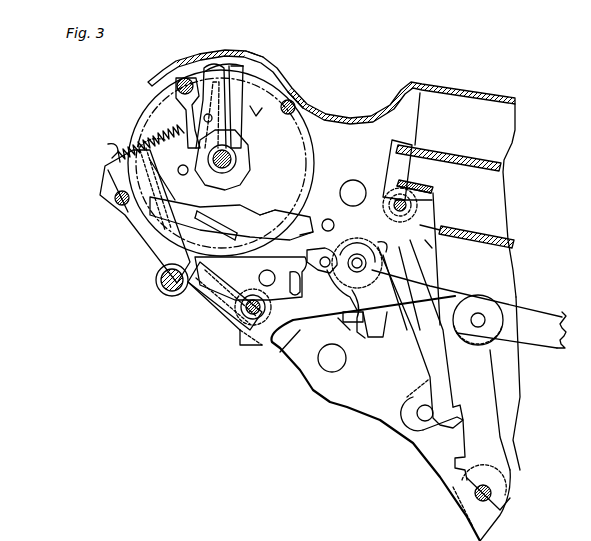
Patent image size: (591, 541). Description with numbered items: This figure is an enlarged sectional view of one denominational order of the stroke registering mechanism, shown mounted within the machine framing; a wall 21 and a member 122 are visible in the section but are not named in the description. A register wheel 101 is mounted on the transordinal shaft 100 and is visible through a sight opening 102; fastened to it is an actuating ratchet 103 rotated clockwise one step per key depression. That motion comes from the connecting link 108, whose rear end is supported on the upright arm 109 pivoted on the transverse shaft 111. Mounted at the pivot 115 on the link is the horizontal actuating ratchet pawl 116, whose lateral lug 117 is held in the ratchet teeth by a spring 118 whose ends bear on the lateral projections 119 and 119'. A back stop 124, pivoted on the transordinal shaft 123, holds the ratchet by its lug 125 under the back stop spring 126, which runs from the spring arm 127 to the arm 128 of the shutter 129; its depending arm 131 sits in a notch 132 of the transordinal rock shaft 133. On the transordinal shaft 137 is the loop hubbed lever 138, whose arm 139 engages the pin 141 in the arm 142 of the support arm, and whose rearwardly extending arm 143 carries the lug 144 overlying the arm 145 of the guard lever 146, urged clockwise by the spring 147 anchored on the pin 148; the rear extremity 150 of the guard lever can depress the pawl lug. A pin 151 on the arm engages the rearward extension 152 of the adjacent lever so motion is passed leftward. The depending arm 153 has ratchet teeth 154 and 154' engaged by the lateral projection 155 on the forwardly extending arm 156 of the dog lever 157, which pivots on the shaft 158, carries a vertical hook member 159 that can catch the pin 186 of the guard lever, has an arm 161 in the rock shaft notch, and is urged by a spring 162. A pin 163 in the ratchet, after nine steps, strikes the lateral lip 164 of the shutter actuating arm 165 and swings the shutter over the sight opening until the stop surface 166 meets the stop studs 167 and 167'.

The wall 21 is at (450, 87).
The transordinal shaft 100 is at (236, 158).
The register wheel 101 is at (298, 143).
The sight opening 102 is at (291, 86).
The actuating ratchet 103 is at (271, 100).
The connecting link 108 is at (545, 345).
The upright arm 109 is at (497, 418).
The transverse shaft 111 is at (475, 500).
The pivot 115 is at (372, 269).
The horizontal actuating ratchet pawl 116 is at (219, 265).
The lateral lug 117 is at (200, 220).
The spring 118 is at (390, 260).
The lateral projection 119 is at (355, 193).
The lateral projection 119' is at (446, 249).
The arm 122 is at (99, 187).
The transordinal shaft 123 is at (114, 200).
The back stop 124 is at (162, 136).
The lateral projection or lug 125 is at (176, 124).
The back stop spring 126 is at (140, 146).
The spring arm 127 is at (108, 149).
The arm of shutter 128 is at (191, 122).
The shutter 129 is at (250, 57).
The depending arm 131 is at (148, 232).
The notch 132 is at (195, 311).
The transordinal rock shaft 133 is at (160, 288).
The transordinal shaft 137 is at (410, 208).
The loop hubbed lever 138 is at (430, 198).
The downwardly and forwardly extending arm 139 is at (443, 355).
The pin 141 is at (416, 414).
The arm 142 is at (428, 425).
The rearwardly extending arm 143 is at (296, 240).
The laterally projecting lug 144 is at (328, 219).
The rearwardly extending arm 145 is at (279, 212).
The guard lever 146 is at (410, 183).
The spring 147 is at (424, 191).
The pin 148 is at (432, 232).
The rear extremity 150 is at (238, 203).
The pin 151 is at (383, 170).
The rearward extension 152 is at (580, 148).
The depending arm 153 is at (378, 301).
The ratchet tooth 154 is at (369, 321).
The ratchet tooth 154' is at (334, 310).
The lateral projection 155 is at (354, 326).
The forwardly extending arm 156 is at (265, 346).
The dog lever 157 is at (257, 349).
The shaft 158 is at (247, 316).
The vertical hook member 159 is at (308, 262).
The arm 161 is at (228, 300).
The spring 162 is at (241, 344).
The pin 163 is at (182, 176).
The lateral lip or lug 164 is at (247, 173).
The shutter actuating arm 165 is at (261, 120).
The stop surface 166 is at (205, 64).
The stop stud 167 is at (314, 93).
The stop stud 167' is at (163, 73).
The pin 186 is at (330, 290).